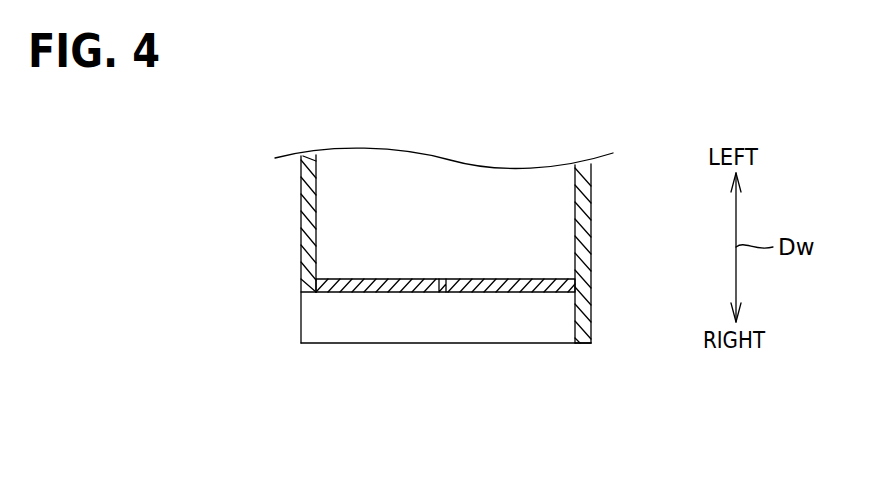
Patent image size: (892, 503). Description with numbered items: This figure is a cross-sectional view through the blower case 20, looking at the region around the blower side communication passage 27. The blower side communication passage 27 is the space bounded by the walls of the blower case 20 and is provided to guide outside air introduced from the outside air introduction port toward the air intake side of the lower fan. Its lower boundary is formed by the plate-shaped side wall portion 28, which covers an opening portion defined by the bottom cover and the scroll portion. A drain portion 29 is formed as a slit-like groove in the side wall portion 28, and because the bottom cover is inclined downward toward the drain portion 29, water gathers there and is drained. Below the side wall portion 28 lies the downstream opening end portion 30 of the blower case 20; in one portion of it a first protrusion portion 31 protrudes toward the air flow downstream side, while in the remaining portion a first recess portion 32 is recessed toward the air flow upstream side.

The blower case 20 is at (300, 237).
The blower side communication passage 27 is at (516, 219).
The side wall portion 28 is at (385, 293).
The drain portion 29 is at (443, 293).
The downstream opening end portion 30 is at (502, 352).
The first protrusion portion 31 is at (583, 345).
The first recess portion 32 is at (310, 293).